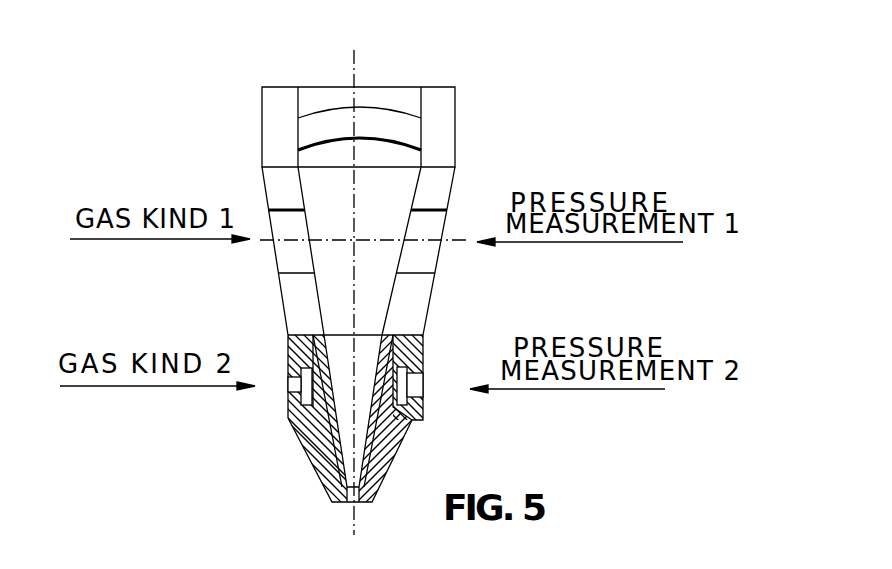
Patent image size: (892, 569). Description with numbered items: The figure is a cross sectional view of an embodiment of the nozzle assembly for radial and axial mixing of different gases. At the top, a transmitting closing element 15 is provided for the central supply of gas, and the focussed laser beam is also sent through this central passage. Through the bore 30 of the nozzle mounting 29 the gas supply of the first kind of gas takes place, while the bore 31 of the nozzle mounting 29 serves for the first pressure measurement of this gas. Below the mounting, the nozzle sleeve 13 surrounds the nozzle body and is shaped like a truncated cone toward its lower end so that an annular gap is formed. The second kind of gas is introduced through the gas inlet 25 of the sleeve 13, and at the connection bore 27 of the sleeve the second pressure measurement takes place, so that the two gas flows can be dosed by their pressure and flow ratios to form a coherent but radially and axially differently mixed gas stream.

The transmitting closing element 15 is at (407, 128).
The bore 30 is at (290, 253).
The bore 31 is at (427, 257).
The nozzle mounting 29 is at (412, 300).
The gas inlet 25 is at (288, 387).
The connection bore 27 is at (427, 385).
The nozzle sleeve 13 is at (318, 443).